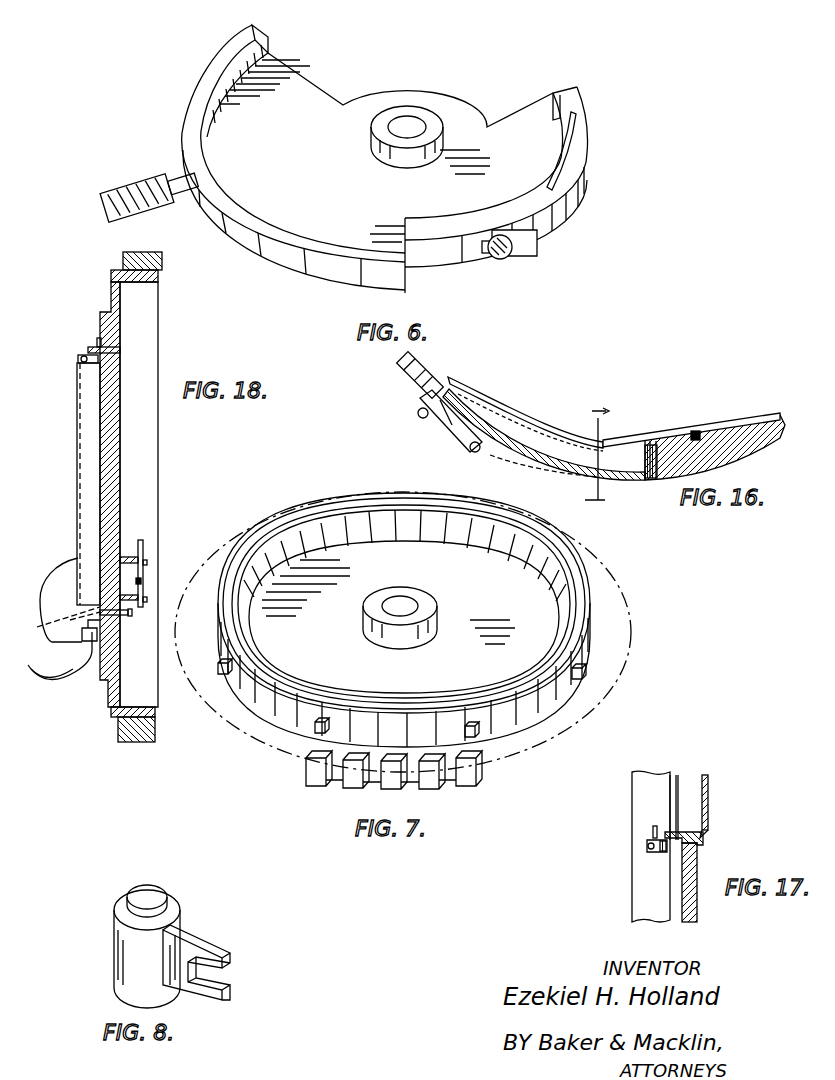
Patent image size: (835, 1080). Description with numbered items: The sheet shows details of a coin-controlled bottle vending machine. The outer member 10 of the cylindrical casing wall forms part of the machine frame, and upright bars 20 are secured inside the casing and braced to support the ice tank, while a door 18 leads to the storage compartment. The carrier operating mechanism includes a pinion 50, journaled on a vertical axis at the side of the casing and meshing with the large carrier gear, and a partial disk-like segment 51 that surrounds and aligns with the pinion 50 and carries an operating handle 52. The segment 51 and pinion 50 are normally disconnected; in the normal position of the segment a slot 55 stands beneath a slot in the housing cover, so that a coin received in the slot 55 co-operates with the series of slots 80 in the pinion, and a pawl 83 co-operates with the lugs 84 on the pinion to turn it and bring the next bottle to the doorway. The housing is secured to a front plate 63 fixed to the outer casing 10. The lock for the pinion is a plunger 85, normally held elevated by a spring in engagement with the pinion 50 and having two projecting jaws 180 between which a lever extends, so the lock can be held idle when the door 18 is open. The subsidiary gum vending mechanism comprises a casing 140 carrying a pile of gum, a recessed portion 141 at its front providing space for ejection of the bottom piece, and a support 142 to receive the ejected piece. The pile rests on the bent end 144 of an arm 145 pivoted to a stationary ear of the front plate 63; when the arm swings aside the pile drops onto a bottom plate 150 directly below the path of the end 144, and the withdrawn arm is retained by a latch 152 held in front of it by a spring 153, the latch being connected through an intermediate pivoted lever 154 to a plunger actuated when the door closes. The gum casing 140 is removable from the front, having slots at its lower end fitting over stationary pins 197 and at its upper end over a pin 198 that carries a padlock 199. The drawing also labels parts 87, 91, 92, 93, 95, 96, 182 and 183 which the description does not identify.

In FIG. 18, the outer casing member 10 is at (123, 259).
In FIG. 16, the outer casing member 10 is at (746, 448).
In FIG. 17, the outer casing member 10 is at (698, 908).
In FIG. 16, the storage door 18 is at (536, 438).
In FIG. 17, the storage door 18 is at (708, 795).
In FIG. 16, the upright bars 20 is at (589, 456).
In FIG. 7, the pinion 50 is at (367, 772).
In FIG. 6, the segment 51 is at (386, 147).
In FIG. 6, the operating handle 52 is at (146, 210).
In FIG. 6, the coin slot 55 is at (580, 130).
In FIG. 18, the front plate 63 is at (111, 293).
In FIG. 7, the slots 80 is at (232, 622).
In FIG. 6, the pawl 83 is at (537, 243).
In FIG. 7, the lugs 84 is at (229, 676).
In FIG. 8, the plunger 85 is at (104, 947).
In FIG. 8, the cap 87 is at (160, 900).
In FIG. 7, the hub 91 is at (428, 605).
In FIG. 6, the hub 92 is at (393, 160).
In FIG. 7, the disk 93 is at (467, 710).
In FIG. 6, the rim segment 95 is at (303, 237).
In FIG. 6, the rim segment 96 is at (473, 217).
In FIG. 18, the gum casing 140 is at (75, 385).
In FIG. 18, the recessed portion 141 is at (45, 592).
In FIG. 18, the support 142 is at (50, 680).
In FIG. 18, the bent end 144 is at (40, 626).
In FIG. 18, the arm 145 is at (129, 616).
In FIG. 18, the bottom plate 150 is at (82, 632).
In FIG. 18, the latch 152 is at (150, 570).
In FIG. 18, the spring 153 is at (145, 545).
In FIG. 18, the pivoted lever 154 is at (141, 582).
In FIG. 8, the projecting jaws 180 is at (222, 958).
In FIG. 16, the pin 182 is at (697, 431).
In FIG. 17, the pin 182 is at (652, 828).
In FIG. 16, the bolt 183 is at (658, 441).
In FIG. 17, the bolt 183 is at (660, 855).
In FIG. 18, the stationary pins 197 is at (90, 637).
In FIG. 18, the pin 198 is at (97, 345).
In FIG. 18, the padlock 199 is at (78, 358).